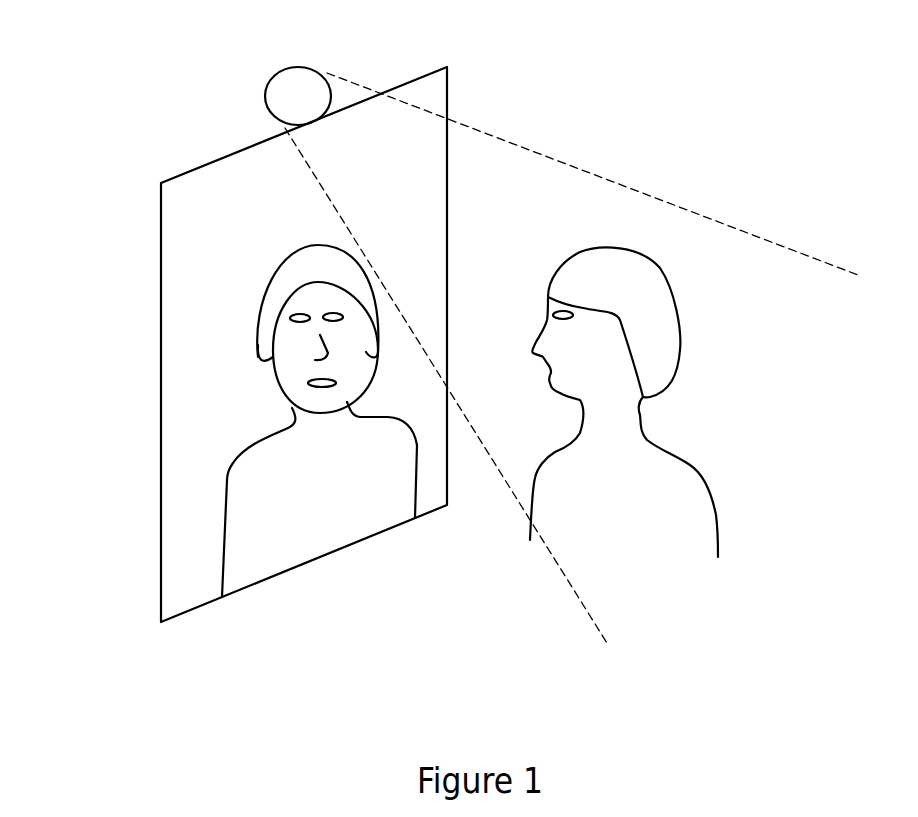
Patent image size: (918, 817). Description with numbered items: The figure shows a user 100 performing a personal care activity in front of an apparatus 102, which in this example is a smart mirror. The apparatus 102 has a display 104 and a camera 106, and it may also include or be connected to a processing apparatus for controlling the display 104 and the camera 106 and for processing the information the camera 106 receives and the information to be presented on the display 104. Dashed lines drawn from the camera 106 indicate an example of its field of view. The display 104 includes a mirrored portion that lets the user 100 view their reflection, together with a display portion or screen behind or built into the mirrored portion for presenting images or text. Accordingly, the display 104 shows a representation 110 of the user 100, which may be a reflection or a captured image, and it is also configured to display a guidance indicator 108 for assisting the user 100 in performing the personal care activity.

The user 100 is at (680, 453).
The apparatus 102 is at (185, 137).
The display 104 is at (163, 250).
The camera 106 is at (292, 67).
The guidance indicator 108 is at (263, 353).
The representation 110 is at (280, 460).